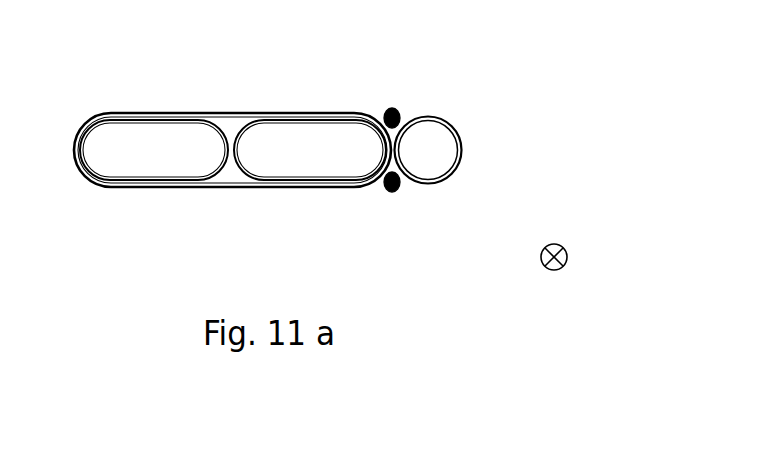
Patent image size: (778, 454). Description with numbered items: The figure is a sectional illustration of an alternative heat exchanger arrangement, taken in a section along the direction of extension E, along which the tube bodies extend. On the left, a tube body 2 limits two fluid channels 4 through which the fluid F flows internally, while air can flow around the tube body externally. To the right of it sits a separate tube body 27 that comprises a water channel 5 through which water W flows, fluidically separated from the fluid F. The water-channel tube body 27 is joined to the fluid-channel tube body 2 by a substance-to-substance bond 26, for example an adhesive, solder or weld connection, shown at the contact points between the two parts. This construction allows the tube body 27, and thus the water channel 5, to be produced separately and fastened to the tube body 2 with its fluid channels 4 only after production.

The tube body 2 is at (232, 95).
The fluid channel 4 is at (167, 160).
The water channel 5 is at (463, 148).
The substance-to-substance bond 26 is at (392, 107).
The tube body 27 is at (496, 150).
The direction of extension E is at (568, 257).